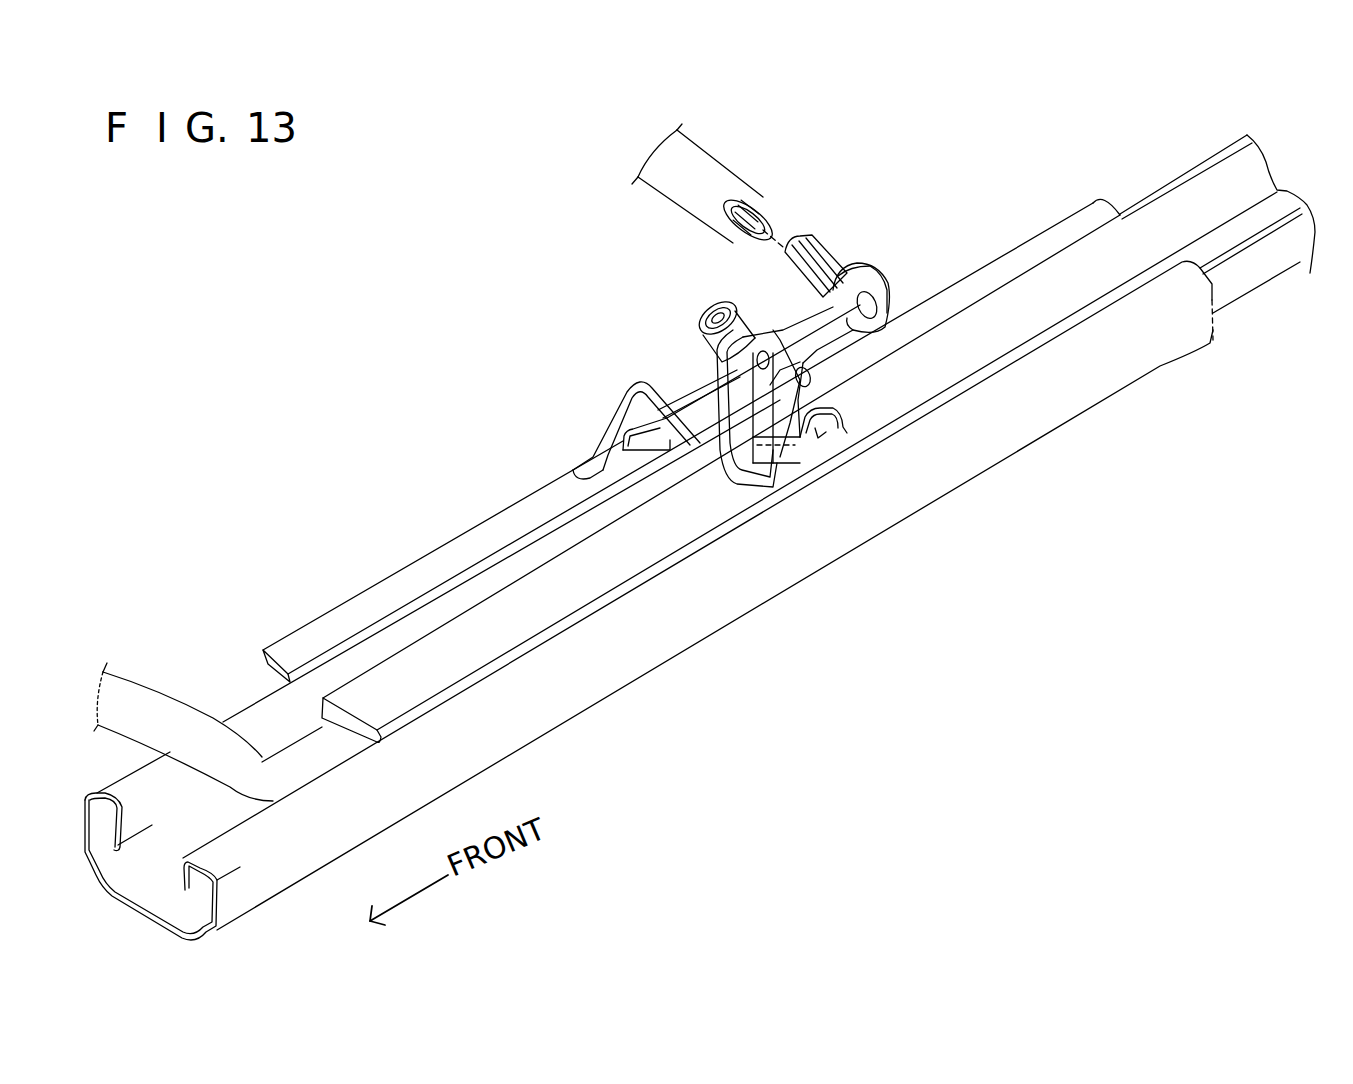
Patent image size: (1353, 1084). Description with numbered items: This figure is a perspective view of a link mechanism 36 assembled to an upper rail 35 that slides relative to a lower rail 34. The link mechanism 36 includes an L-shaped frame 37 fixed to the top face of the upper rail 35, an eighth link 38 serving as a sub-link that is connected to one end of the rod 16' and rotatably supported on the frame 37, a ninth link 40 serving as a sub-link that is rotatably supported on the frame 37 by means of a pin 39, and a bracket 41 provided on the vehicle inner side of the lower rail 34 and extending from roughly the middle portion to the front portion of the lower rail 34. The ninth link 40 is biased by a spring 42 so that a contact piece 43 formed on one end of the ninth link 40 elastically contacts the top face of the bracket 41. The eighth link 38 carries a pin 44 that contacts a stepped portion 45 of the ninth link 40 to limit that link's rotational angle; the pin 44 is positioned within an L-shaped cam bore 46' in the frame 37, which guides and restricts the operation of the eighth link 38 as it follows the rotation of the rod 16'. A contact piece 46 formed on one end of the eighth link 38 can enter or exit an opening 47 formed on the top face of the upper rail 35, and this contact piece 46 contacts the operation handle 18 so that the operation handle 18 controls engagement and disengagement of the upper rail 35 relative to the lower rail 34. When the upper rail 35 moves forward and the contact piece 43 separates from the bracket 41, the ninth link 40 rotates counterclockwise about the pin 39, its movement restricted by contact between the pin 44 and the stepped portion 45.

The rod 16' is at (722, 185).
The operation handle 18 is at (177, 697).
The lower rail 34 is at (677, 645).
The upper rail 35 is at (697, 520).
The link mechanism 36 is at (893, 248).
The L-shaped frame 37 is at (915, 272).
The eighth link 38 is at (835, 380).
The pin 39 is at (727, 450).
The ninth link 40 is at (632, 403).
The bracket 41 is at (417, 557).
The spring 42 is at (707, 318).
The contact piece 43 is at (588, 460).
The pin 44 is at (855, 440).
The stepped portion 45 is at (763, 463).
The contact piece 46 is at (843, 486).
The cam bore 46' is at (781, 282).
The opening 47 is at (825, 440).